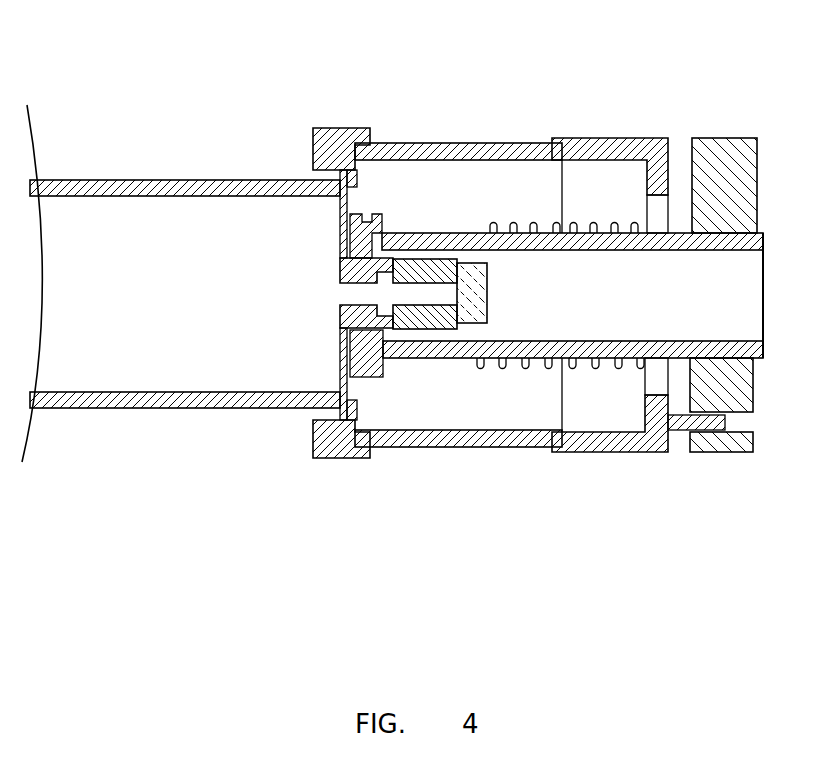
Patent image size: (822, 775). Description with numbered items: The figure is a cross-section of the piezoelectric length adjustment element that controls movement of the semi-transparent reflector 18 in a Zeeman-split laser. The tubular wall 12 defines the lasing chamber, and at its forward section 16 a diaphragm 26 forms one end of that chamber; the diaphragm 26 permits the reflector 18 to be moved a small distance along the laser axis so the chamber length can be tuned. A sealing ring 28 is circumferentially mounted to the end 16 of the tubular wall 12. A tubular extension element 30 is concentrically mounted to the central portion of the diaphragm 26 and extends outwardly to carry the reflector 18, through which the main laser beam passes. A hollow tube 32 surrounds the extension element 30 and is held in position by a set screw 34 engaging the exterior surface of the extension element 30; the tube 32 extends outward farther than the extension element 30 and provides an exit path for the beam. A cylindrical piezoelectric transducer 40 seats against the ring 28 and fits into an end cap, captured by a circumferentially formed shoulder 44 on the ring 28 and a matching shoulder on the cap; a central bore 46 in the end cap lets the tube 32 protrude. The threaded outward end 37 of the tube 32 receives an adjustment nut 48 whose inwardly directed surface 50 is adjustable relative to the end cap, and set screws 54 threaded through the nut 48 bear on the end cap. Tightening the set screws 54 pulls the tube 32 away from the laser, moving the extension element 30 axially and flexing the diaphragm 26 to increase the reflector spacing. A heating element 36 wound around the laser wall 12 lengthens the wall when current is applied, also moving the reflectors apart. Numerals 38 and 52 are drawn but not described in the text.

The tubular wall 12 is at (126, 392).
The forward section 16 is at (181, 305).
The semi-transparent reflector 18 is at (488, 290).
The diaphragm 26 is at (341, 240).
The sealing ring 28 is at (317, 242).
The tubular extension element 30 is at (338, 281).
The tube 32 is at (458, 233).
The set screw 34 is at (367, 222).
The heating element 36 is at (502, 382).
The outward end 37 is at (763, 268).
The upper spring 38 is at (515, 221).
The piezoelectric transducer 40 is at (432, 143).
The shoulder 44 is at (336, 128).
The bore 46 is at (672, 210).
The adjustment nut 48 is at (730, 139).
The inwardly directed surface 50 is at (737, 138).
The lower block 52 is at (754, 395).
The set screw 54 is at (728, 423).